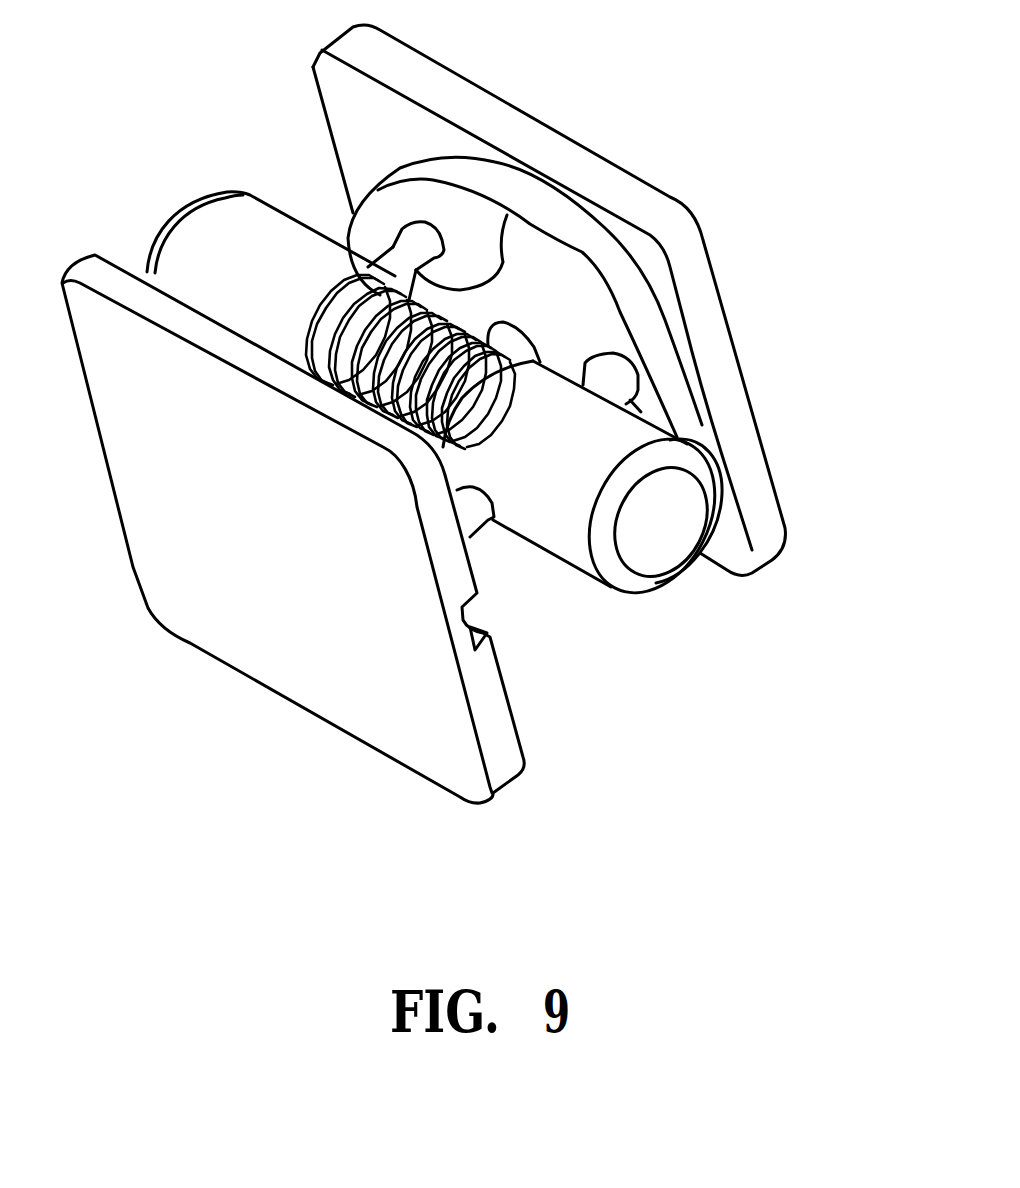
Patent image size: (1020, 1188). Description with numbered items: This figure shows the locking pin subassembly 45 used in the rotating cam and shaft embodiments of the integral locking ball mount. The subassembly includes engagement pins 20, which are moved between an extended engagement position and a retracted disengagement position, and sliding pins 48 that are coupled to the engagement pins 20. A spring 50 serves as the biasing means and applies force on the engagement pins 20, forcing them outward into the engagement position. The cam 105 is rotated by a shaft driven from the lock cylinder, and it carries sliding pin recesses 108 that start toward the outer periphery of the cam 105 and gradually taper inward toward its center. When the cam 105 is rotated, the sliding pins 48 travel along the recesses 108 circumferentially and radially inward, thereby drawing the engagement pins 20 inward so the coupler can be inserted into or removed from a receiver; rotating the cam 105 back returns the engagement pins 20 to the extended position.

The engagement pin 20 is at (163, 223).
The locking pin subassembly 45 is at (812, 439).
The sliding pin 48 is at (400, 250).
The spring 50 is at (372, 292).
The cam 105 is at (597, 258).
The sliding pin recess 108 is at (507, 215).